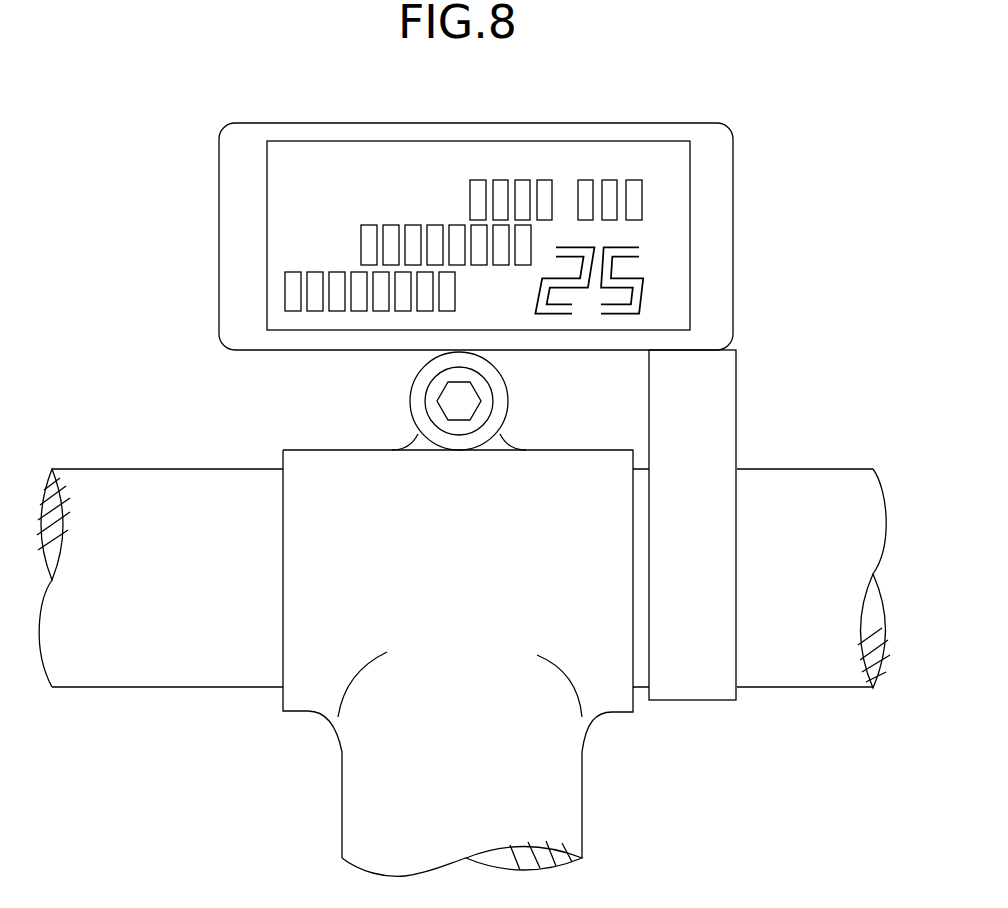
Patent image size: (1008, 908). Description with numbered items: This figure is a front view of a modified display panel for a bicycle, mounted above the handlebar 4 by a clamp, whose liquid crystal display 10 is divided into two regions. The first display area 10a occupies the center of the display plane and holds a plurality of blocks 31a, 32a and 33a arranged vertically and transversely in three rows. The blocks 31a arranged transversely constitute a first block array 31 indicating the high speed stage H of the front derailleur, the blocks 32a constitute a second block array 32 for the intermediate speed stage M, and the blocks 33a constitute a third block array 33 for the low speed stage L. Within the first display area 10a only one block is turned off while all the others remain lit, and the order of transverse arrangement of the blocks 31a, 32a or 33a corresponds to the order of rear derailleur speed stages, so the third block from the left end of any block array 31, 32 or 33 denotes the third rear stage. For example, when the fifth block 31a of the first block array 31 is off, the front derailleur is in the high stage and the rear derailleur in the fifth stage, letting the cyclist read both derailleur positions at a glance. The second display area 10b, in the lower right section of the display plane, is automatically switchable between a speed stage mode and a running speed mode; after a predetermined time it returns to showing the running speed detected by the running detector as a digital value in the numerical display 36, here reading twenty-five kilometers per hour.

The handlebar 4 is at (137, 478).
The liquid crystal display 10 is at (542, 241).
The first display area 10a is at (611, 146).
The second display area 10b is at (678, 308).
The first block array 31 is at (525, 146).
The blocks 31a is at (588, 181).
The second block array 32 is at (416, 169).
The blocks 32a is at (437, 231).
The third block array 33 is at (347, 340).
The blocks 33a is at (404, 312).
The numerical display 36 is at (620, 316).